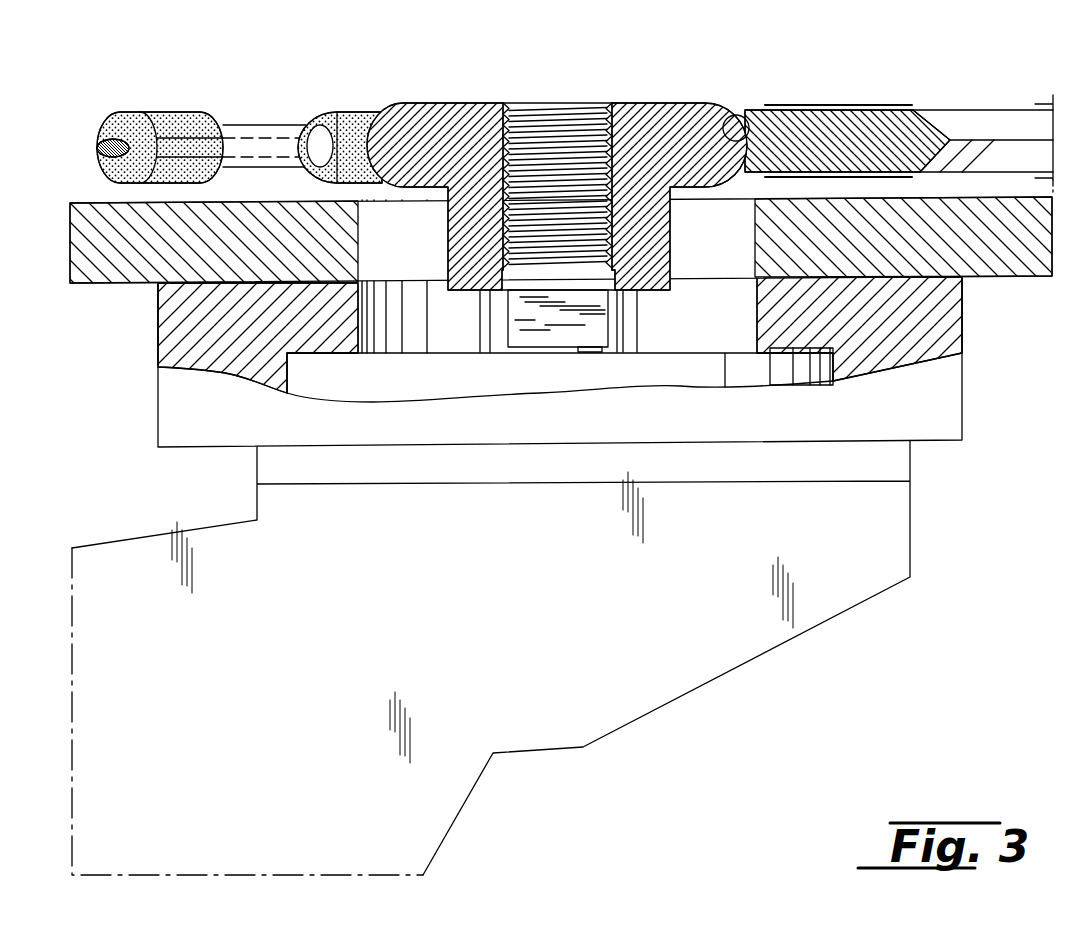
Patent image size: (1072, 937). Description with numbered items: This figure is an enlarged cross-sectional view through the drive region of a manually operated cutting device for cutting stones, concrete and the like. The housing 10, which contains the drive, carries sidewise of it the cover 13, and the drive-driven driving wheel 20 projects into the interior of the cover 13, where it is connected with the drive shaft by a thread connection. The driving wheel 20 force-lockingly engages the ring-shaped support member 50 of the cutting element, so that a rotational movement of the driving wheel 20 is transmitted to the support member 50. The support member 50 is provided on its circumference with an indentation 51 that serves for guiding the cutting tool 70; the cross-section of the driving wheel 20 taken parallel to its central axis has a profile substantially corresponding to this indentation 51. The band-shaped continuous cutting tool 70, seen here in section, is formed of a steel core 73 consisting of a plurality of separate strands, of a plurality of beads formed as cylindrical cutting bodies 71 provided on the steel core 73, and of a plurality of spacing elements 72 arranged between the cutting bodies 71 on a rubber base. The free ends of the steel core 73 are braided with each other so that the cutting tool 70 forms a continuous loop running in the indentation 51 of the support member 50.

The housing 10 is at (850, 622).
The cover 13 is at (1002, 258).
The driving wheel 20 is at (662, 110).
The support member 50 is at (932, 124).
The indentation 51 is at (728, 108).
The cutting tool 70 is at (336, 98).
The cutting bodies 71 is at (167, 117).
The spacing elements 72 is at (248, 128).
The steel core 73 is at (113, 133).